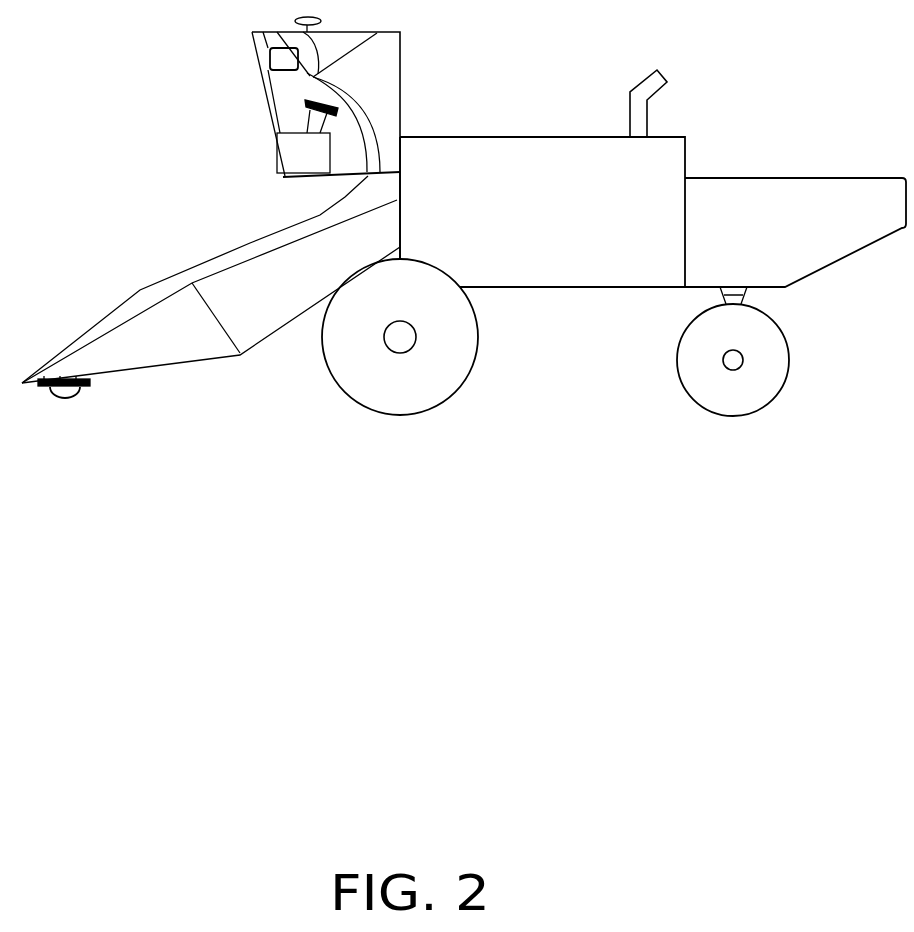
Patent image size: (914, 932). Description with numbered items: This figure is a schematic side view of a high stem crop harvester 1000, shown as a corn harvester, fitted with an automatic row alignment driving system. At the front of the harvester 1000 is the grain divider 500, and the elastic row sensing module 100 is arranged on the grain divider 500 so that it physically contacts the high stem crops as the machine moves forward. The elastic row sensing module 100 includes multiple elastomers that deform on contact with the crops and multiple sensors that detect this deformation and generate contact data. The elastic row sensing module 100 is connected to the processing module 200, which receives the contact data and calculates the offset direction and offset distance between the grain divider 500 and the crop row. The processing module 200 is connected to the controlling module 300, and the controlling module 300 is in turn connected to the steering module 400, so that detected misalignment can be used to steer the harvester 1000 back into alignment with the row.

The harvester 1000 is at (478, 137).
The elastic row sensing module 100 is at (47, 377).
The processing module 200 is at (283, 177).
The controlling module 300 is at (270, 62).
The steering module 400 is at (305, 108).
The grain divider 500 is at (97, 370).